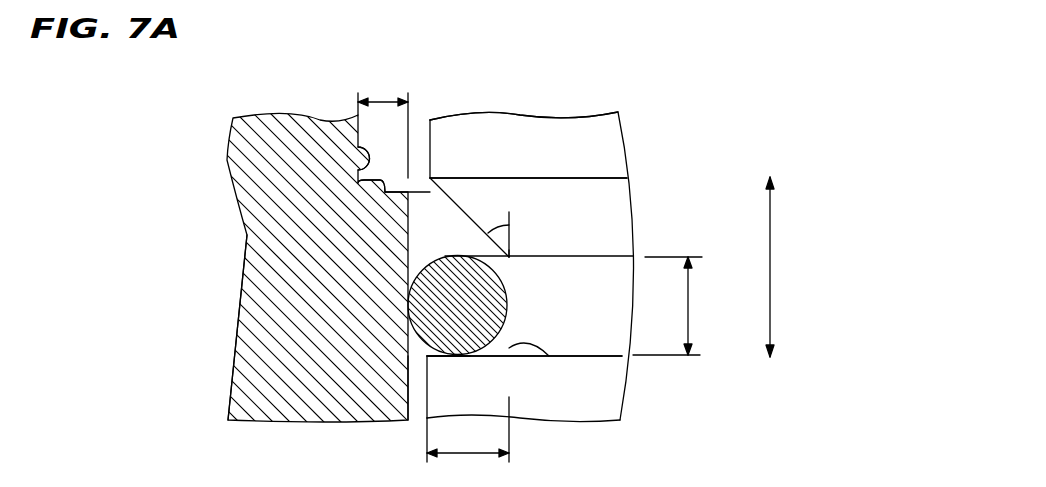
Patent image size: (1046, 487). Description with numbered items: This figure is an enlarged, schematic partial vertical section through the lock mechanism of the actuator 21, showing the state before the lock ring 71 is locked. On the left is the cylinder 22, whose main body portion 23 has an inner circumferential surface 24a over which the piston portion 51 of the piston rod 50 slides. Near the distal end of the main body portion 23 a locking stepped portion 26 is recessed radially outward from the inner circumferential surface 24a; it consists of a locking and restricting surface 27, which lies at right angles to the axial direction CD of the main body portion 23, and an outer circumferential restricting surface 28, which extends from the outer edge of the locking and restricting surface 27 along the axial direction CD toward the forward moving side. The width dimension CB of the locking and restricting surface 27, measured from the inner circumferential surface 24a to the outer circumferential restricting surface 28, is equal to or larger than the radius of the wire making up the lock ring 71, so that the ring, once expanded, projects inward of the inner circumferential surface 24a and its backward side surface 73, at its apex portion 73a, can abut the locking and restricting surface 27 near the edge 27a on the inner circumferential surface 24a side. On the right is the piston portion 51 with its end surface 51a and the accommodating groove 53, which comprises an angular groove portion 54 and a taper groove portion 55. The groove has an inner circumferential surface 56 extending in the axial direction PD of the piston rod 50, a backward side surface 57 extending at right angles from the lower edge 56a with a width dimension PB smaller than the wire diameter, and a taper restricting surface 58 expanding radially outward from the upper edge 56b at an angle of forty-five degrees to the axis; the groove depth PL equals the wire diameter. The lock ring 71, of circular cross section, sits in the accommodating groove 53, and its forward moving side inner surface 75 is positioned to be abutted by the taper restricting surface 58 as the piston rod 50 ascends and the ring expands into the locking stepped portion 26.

The actuator 21 is at (203, 143).
The cylinder 22 is at (210, 355).
The main body portion 23 is at (280, 358).
The inner circumferential surface 24a is at (412, 392).
The locking stepped portion 26 is at (167, 177).
The locking and restricting surface 27 is at (358, 186).
The edge 27a is at (411, 178).
The outer circumferential restricting surface 28 is at (362, 168).
The piston rod 50 is at (610, 138).
The piston portion 51 is at (615, 264).
The end surface 51a is at (527, 132).
The accommodating groove 53 is at (608, 401).
The angular groove portion 54 is at (592, 340).
The taper groove portion 55 is at (608, 200).
The inner circumferential surface 56 is at (510, 302).
The lower edge 56a is at (514, 364).
The upper edge 56b is at (512, 258).
The backward side surface 57 is at (546, 350).
The taper restricting surface 58 is at (470, 217).
The lock ring 71 is at (430, 302).
The backward side surface 73 is at (365, 408).
The apex portion 73a is at (456, 357).
The forward moving side inner surface 75 is at (514, 262).
The width dimension CB is at (370, 95).
The width dimension PB is at (468, 441).
The groove depth dimension PL is at (680, 306).
The axial direction PD is at (802, 287).
The axial direction CD is at (770, 275).